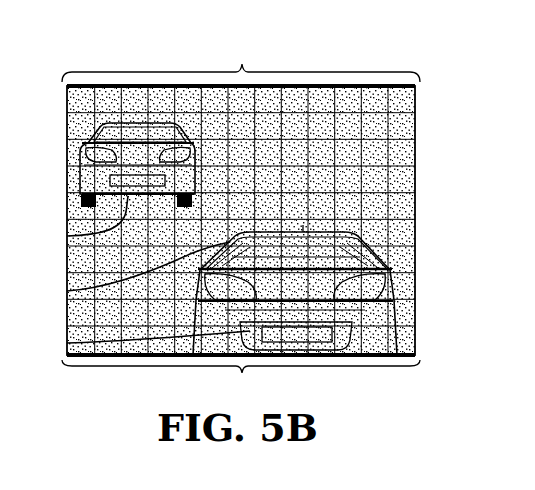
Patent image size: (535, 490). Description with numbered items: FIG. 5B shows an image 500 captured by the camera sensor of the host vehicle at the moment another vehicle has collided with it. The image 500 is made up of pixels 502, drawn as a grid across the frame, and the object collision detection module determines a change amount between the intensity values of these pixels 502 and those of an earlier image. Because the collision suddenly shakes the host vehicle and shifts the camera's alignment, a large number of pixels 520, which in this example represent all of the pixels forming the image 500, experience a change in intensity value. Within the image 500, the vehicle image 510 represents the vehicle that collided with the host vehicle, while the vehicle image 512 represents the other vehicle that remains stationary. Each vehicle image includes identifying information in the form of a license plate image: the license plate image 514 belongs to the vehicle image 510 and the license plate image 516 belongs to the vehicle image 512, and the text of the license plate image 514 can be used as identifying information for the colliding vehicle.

The image 500 is at (392, 59).
The pixels 502 is at (241, 62).
The pixels 520 is at (241, 381).
The license plate image 516 is at (84, 176).
The vehicle image 512 is at (67, 237).
The vehicle image 510 is at (67, 290).
The license plate image 514 is at (67, 342).